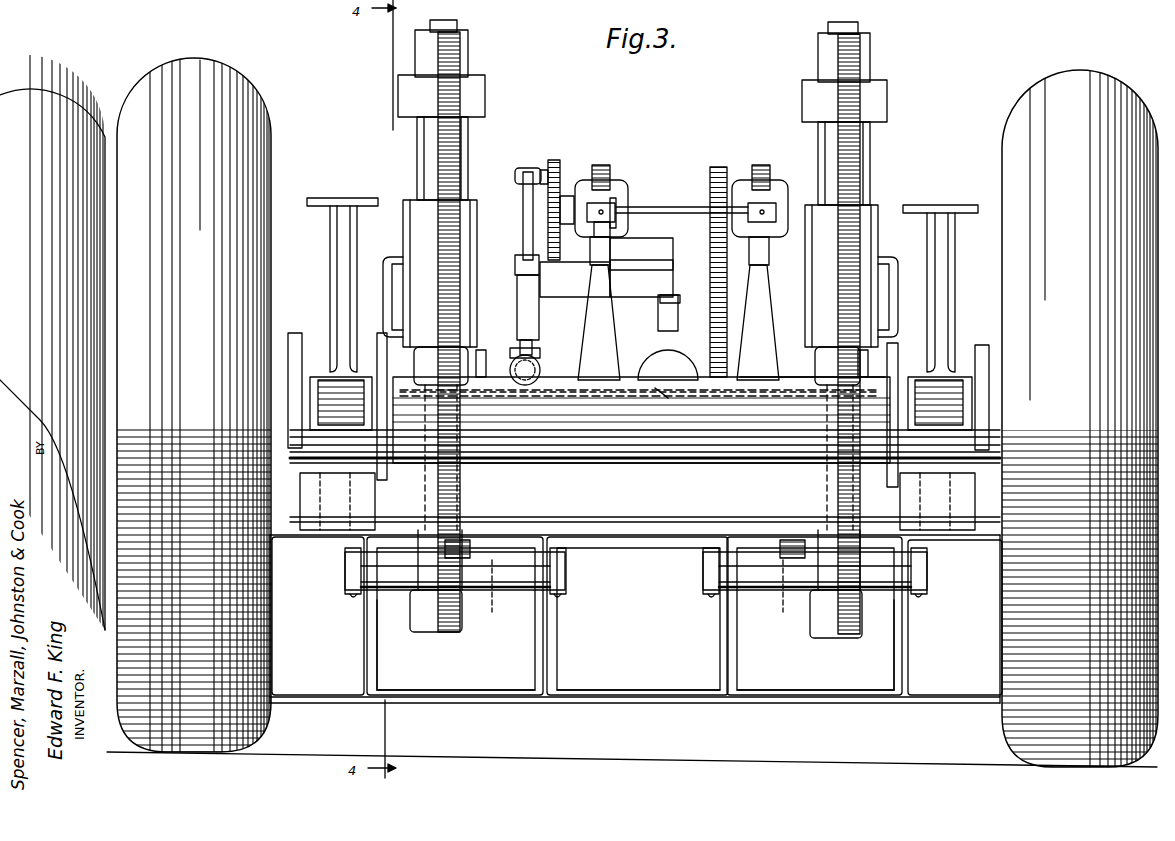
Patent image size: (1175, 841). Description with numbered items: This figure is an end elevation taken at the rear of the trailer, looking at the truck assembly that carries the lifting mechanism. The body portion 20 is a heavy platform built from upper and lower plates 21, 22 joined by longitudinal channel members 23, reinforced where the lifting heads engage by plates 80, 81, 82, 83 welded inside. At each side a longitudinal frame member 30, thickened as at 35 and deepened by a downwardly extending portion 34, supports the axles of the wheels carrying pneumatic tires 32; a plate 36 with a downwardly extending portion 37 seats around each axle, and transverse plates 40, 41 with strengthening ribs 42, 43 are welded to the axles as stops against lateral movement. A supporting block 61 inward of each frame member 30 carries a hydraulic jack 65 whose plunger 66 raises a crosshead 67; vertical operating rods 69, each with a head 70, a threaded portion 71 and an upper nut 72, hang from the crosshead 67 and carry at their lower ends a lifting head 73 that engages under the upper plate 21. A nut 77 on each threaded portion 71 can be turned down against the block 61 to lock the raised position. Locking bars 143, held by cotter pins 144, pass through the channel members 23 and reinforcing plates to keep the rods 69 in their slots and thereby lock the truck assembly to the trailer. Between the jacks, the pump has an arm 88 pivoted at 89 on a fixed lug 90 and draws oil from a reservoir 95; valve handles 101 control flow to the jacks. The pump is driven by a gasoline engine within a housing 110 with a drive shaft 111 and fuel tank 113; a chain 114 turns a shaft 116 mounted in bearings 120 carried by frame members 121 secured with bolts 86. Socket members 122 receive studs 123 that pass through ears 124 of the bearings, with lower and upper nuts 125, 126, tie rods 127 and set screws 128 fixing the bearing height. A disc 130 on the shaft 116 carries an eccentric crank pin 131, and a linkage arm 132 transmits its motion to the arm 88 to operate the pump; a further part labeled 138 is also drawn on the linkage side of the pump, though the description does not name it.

The body portion 20 is at (628, 530).
The upper plate 21 is at (668, 546).
The lower plate 22 is at (636, 692).
The channel members 23 is at (366, 636).
The frame members 30 is at (330, 252).
The pneumatic tires 32 is at (148, 82).
The downwardly extending portion 34 is at (330, 522).
The increased thickness portion 35 is at (332, 284).
The plate 36 is at (318, 394).
The downwardly extending portion 37 is at (320, 407).
The transverse plate 40 is at (295, 333).
The transverse plate 41 is at (380, 338).
The strengthening rib 42 is at (288, 350).
The strengthening rib 43 is at (637, 438).
The supporting block 61 is at (480, 470).
The hydraulic jack 65 is at (404, 228).
The plunger 66 is at (417, 147).
The crosshead 67 is at (478, 88).
The operating rods 69 is at (438, 170).
The head 70 is at (432, 630).
The threaded portion 71 is at (455, 258).
The nuts 72 is at (464, 53).
The lifting head 73 is at (637, 596).
The nut 77 is at (470, 366).
The reinforcing plate 80 is at (535, 360).
The reinforcing plate 81 is at (462, 690).
The reinforcing plate 82 is at (378, 662).
The reinforcing plate 83 is at (502, 404).
The bolts 86 is at (760, 365).
The arm 88 is at (519, 312).
The pivot 89 is at (517, 340).
The lug 90 is at (540, 352).
The reservoir 95 is at (658, 345).
The operating handles 101 is at (665, 398).
The housing 110 is at (630, 290).
The drive shaft 111 is at (689, 330).
The fuel tank 113 is at (675, 250).
The chain 114 is at (705, 274).
The shaft 116 is at (680, 208).
The bearings 120 is at (580, 180).
The frame members 121 is at (680, 268).
The socket members 122 is at (590, 258).
The studs 123 is at (604, 165).
The ears 124 is at (618, 205).
The lower nuts 125 is at (620, 222).
The upper nuts 126 is at (612, 205).
The tie rods 127 is at (665, 208).
The set screws 128 is at (745, 180).
The disc 130 is at (553, 160).
The crank pin 131 is at (545, 172).
The linkage arm 132 is at (523, 230).
The block 138 is at (516, 268).
The locking bars 143 is at (348, 576).
The cotter pins 144 is at (352, 596).